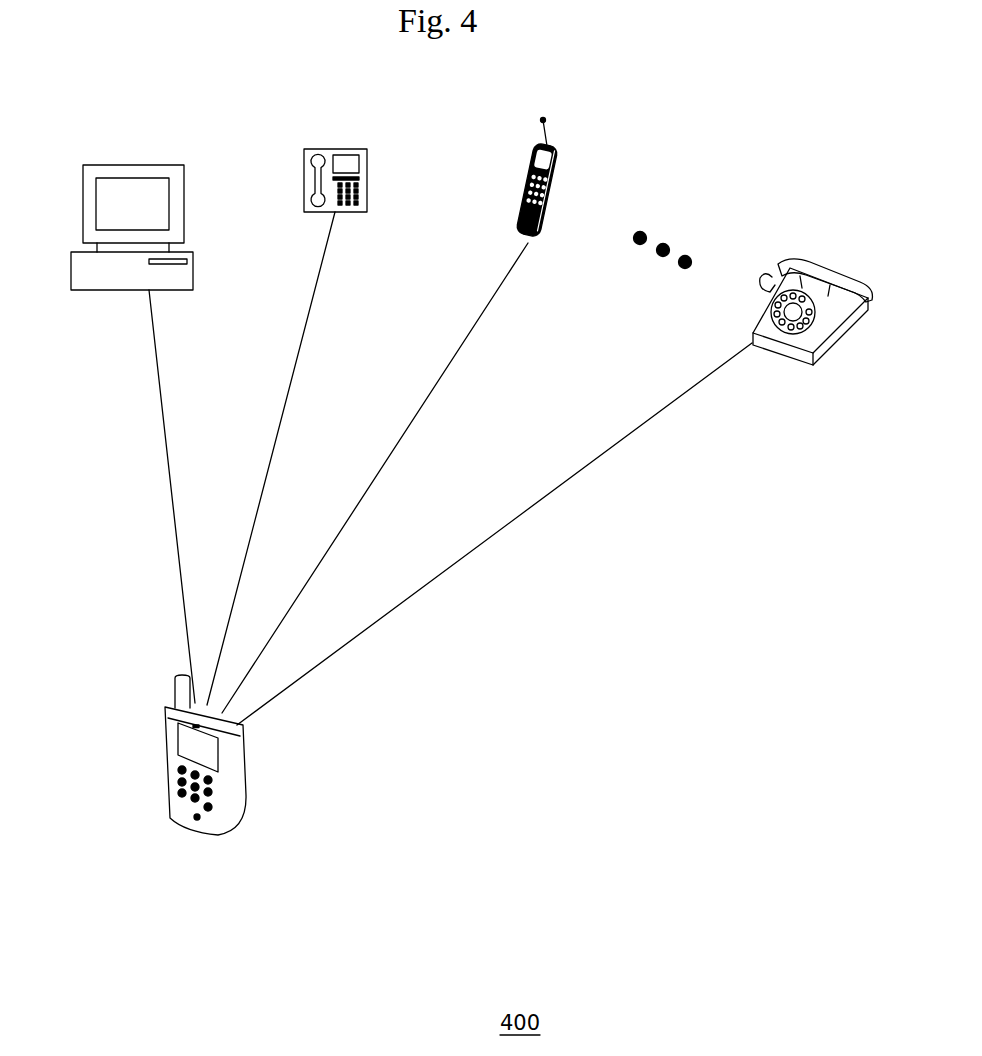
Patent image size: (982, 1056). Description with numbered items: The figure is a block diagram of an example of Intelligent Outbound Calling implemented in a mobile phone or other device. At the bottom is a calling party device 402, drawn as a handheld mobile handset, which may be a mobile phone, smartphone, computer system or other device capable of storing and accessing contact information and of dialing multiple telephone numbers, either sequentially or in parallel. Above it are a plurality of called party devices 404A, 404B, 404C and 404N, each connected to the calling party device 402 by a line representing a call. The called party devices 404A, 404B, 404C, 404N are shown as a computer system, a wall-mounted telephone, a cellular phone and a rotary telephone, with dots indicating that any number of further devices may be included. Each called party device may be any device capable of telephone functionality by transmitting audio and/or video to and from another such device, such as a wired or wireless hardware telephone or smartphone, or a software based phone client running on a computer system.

The calling party device 402 is at (257, 755).
The computer 404A is at (143, 207).
The wall telephone 404B is at (363, 160).
The cellular phone 404C is at (589, 178).
The rotary telephone 404N is at (798, 287).